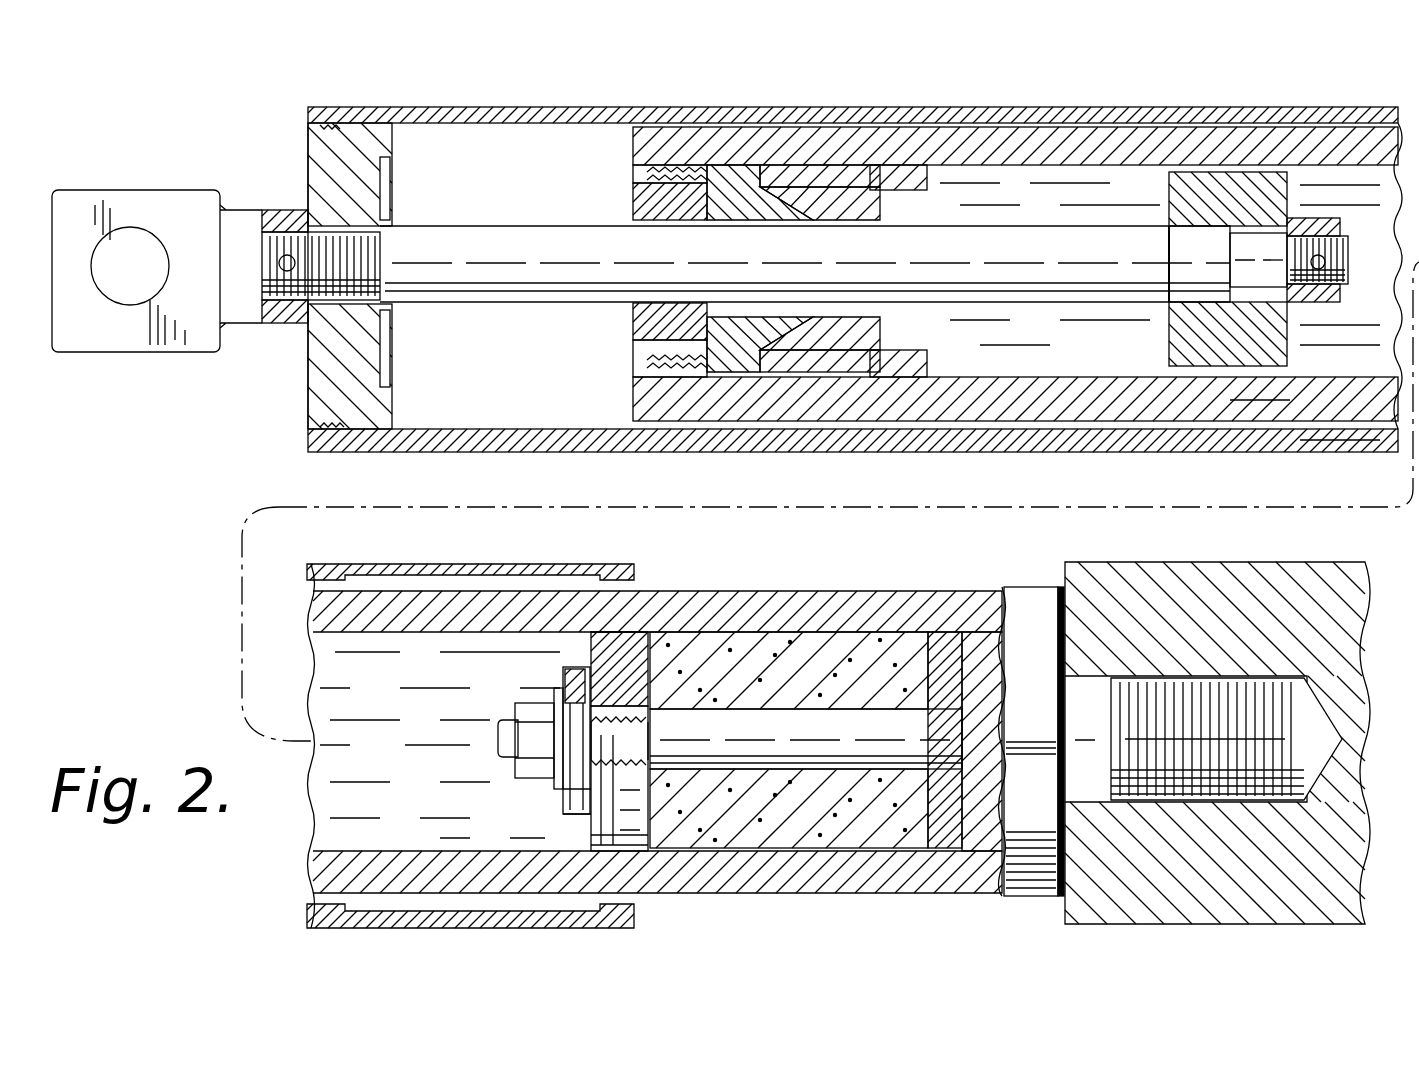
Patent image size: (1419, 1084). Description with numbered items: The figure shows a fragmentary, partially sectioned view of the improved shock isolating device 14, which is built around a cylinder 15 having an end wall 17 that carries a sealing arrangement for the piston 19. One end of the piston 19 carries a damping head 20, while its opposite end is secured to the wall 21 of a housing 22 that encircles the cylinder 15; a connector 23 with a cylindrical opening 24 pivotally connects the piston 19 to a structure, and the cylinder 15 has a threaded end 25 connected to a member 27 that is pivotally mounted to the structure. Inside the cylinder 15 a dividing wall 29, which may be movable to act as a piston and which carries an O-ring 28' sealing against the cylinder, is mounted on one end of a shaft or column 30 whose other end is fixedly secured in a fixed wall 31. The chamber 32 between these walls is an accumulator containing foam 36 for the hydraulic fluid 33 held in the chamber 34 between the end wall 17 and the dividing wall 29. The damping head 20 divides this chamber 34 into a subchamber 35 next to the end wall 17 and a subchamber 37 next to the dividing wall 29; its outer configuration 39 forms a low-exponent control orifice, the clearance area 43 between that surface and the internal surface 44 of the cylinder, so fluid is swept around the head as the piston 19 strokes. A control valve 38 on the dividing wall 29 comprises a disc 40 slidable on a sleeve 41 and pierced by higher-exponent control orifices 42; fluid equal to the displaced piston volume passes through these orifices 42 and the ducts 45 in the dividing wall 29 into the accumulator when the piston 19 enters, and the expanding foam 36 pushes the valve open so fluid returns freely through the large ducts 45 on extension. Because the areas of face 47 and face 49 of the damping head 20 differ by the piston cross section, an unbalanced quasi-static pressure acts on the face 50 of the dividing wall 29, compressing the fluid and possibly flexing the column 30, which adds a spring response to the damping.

The shock isolating device 14 is at (298, 587).
The cylinder 15 is at (1040, 400).
The end wall 17 is at (632, 195).
The piston 19 is at (455, 290).
The damping head 20 is at (1245, 200).
The wall 21 is at (345, 200).
The housing 22 is at (516, 107).
The connector 23 is at (195, 340).
The cylindrical opening 24 is at (130, 266).
The threaded end 25 is at (1173, 802).
The member 27 is at (1289, 615).
The O-ring 28' is at (592, 573).
The dividing wall 29 is at (652, 659).
The shaft or column 30 is at (699, 749).
The fixed wall 31 is at (940, 648).
The chamber 32 is at (850, 651).
The hydraulic fluid 33 is at (1017, 207).
The chamber 34 is at (1020, 337).
The subchamber 35 is at (1120, 370).
The foam 36 is at (888, 824).
The subchamber 37 is at (1335, 385).
The control valve 38 is at (550, 746).
The outer configuration 39 is at (1212, 168).
The disc 40 is at (560, 800).
The sleeve 41 is at (556, 700).
The control orifice 42 is at (575, 690).
The clearance area 43 is at (1235, 380).
The internal surface 44 is at (1336, 172).
The ducts 45 is at (616, 684).
The face 47 is at (1334, 197).
The face 49 is at (1169, 330).
The lock ring 50 is at (591, 835).